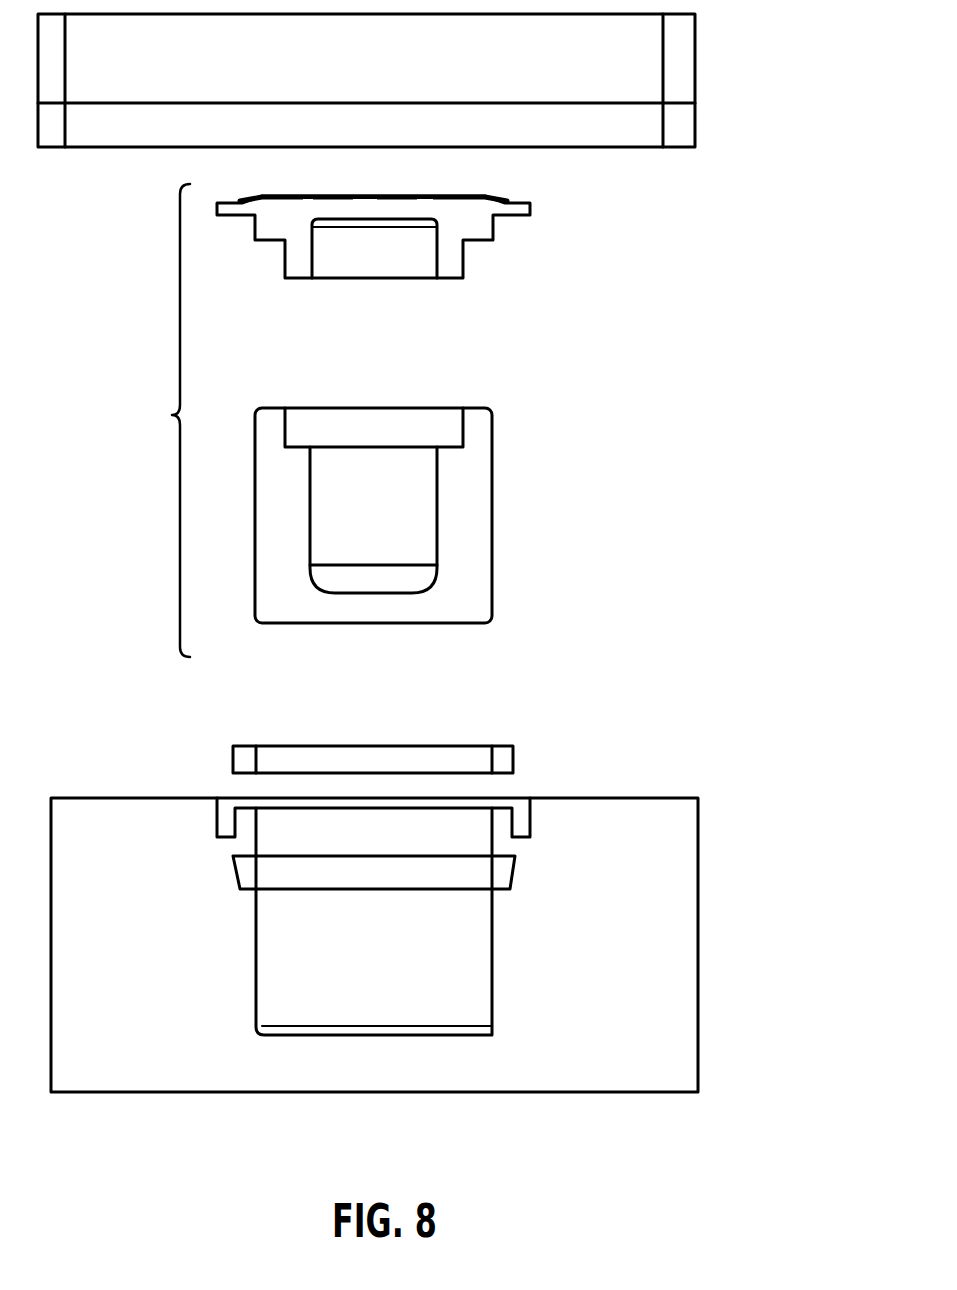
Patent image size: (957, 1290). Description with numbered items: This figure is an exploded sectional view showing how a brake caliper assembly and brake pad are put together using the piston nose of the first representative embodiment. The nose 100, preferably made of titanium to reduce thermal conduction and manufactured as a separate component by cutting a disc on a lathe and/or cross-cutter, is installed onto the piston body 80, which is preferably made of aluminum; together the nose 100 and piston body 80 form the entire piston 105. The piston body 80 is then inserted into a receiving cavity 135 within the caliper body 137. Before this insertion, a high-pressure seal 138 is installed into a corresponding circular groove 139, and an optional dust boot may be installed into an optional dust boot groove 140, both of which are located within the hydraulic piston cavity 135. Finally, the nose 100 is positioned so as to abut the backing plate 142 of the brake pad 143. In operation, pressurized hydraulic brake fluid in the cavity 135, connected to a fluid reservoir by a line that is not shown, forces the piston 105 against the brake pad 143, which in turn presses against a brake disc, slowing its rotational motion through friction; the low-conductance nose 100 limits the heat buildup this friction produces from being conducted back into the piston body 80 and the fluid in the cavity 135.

The brake pad 143 is at (683, 73).
The backing plate 142 is at (153, 137).
The piston 105 is at (172, 415).
The nose 100 is at (540, 208).
The piston body 80 is at (478, 462).
The high-pressure seal 138 is at (503, 757).
The dust boot groove 140 is at (518, 817).
The circular groove 139 is at (503, 872).
The caliper body 137 is at (653, 1038).
The receiving cavity 135 is at (277, 994).